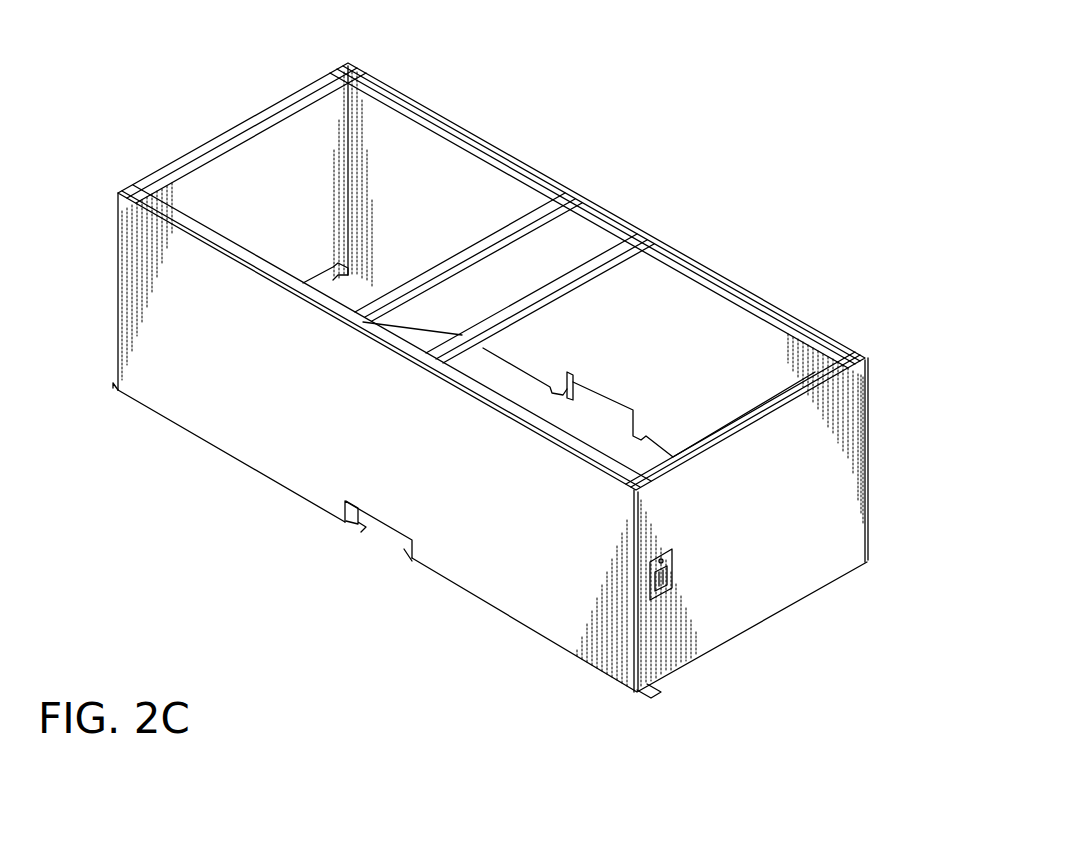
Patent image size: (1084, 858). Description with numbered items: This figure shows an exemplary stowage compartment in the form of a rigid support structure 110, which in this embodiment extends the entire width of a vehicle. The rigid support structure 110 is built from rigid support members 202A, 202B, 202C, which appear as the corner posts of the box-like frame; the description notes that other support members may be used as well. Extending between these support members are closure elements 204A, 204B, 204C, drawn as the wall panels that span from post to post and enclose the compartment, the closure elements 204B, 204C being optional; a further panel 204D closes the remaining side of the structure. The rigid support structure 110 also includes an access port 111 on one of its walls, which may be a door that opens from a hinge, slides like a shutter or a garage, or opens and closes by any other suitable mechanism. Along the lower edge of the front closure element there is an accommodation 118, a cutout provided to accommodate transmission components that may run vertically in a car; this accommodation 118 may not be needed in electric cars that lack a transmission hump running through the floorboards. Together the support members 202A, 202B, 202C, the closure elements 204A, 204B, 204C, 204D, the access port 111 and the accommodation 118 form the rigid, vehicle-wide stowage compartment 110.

The rigid support structure 110 is at (657, 93).
The access port 111 is at (703, 613).
The accommodation 118 is at (386, 534).
The rigid support member 202A is at (636, 615).
The rigid support member 202B is at (115, 238).
The rigid support member 202C is at (348, 62).
The closure element 204A is at (400, 450).
The closure element 204B is at (237, 187).
The closure element 204C is at (720, 332).
The right wall panel 204D is at (868, 482).